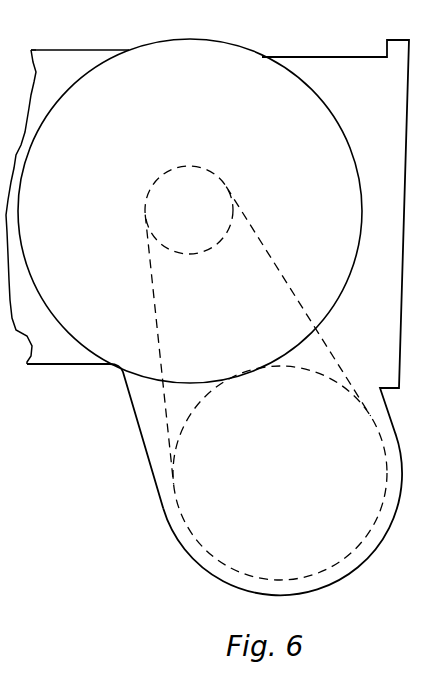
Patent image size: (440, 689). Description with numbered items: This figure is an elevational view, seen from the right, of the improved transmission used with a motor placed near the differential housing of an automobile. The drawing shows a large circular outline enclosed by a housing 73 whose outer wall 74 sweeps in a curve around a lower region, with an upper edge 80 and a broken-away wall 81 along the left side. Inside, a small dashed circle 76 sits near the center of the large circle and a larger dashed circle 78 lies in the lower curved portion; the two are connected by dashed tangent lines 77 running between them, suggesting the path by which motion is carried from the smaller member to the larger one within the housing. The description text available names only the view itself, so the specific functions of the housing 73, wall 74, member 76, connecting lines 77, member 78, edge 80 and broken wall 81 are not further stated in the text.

The housing 73 is at (326, 58).
The curved housing wall 74 is at (175, 530).
The drive pulley 76 is at (145, 209).
The belt 77 is at (167, 415).
The driven pulley 78 is at (180, 498).
The housing edge 80 is at (18, 40).
The broken-away housing wall 81 is at (18, 207).